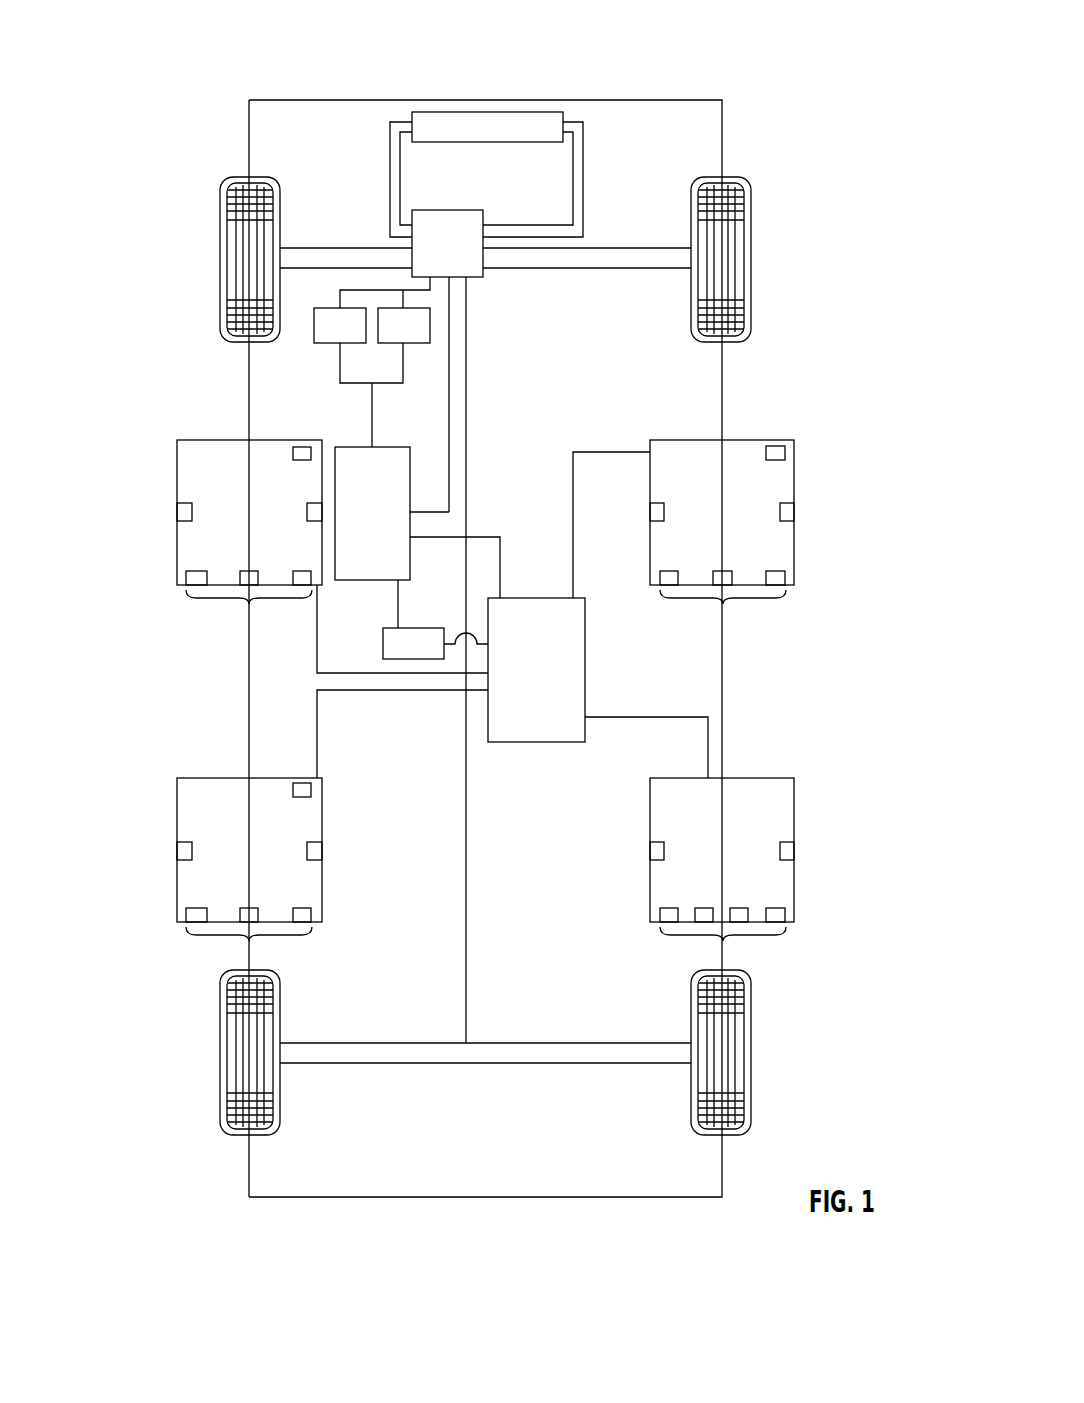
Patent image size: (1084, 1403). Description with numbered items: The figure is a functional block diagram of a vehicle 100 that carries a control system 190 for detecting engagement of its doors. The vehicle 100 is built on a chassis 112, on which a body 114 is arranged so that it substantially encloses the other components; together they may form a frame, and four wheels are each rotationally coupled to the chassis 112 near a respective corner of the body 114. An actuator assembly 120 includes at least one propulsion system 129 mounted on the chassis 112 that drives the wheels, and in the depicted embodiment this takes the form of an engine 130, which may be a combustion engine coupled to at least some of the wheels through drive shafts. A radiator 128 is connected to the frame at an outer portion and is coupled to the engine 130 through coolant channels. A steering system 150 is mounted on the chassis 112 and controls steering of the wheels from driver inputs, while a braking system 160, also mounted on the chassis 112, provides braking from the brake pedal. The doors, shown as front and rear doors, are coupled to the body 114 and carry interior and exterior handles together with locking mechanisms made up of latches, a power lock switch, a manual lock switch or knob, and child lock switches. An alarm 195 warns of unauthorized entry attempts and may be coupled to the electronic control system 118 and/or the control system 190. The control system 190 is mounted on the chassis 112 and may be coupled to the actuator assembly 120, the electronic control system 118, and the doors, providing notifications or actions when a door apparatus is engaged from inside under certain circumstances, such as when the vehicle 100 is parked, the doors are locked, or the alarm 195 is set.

The vehicle 100 is at (232, 50).
The chassis 112 is at (466, 740).
The body 114 is at (249, 693).
The electronic control system 118 is at (355, 525).
The actuator assembly 120 is at (465, 282).
The radiator 128 is at (480, 112).
The propulsion system 129 is at (455, 210).
The engine 130 is at (430, 240).
The steering system 150 is at (323, 339).
The braking system 160 is at (387, 339).
The control system 190 is at (536, 742).
The alarm 195 is at (420, 628).